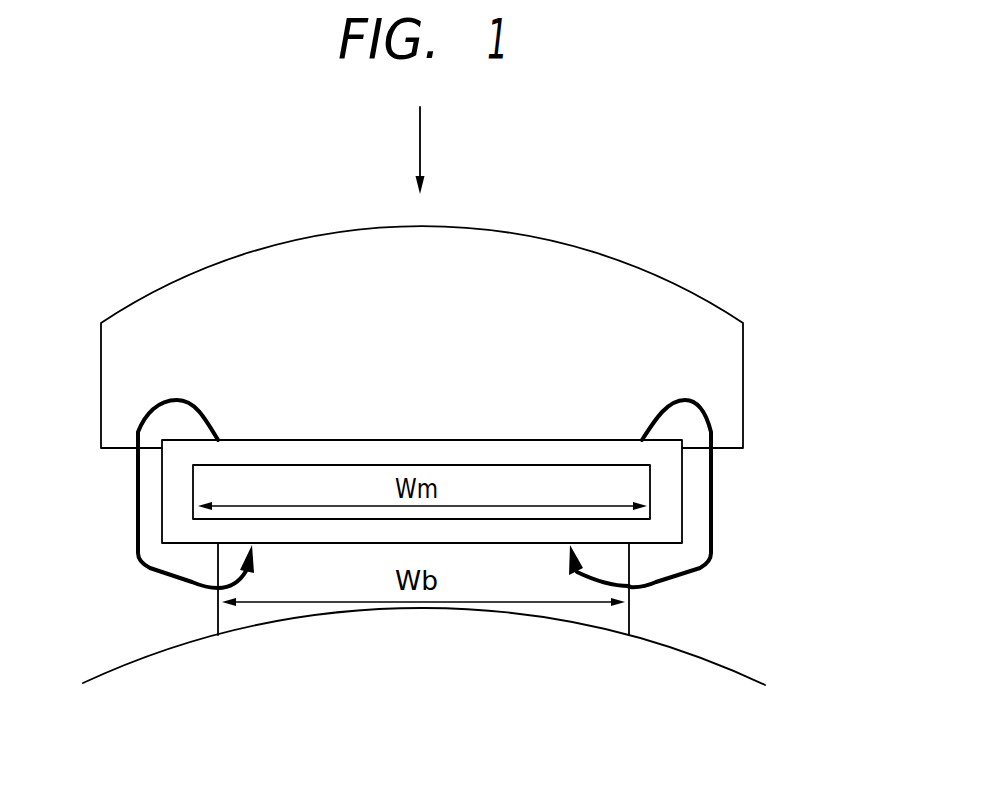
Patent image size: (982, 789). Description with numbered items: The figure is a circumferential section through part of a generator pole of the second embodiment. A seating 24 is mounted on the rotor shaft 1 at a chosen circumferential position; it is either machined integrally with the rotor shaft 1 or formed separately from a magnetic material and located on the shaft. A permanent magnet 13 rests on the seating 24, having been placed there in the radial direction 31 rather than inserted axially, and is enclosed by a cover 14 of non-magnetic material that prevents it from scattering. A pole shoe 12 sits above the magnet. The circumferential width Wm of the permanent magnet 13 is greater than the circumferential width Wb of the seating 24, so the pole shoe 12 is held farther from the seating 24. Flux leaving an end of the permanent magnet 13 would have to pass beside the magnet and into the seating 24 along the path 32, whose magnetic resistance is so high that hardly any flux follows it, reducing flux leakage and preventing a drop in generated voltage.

The rotor shaft 1 is at (730, 688).
The pole shoe 12 is at (725, 352).
The permanent magnet 13 is at (213, 487).
The cover 14 is at (670, 500).
The seating 24 is at (613, 615).
The radial direction 31 is at (420, 146).
The path 32 is at (702, 408).